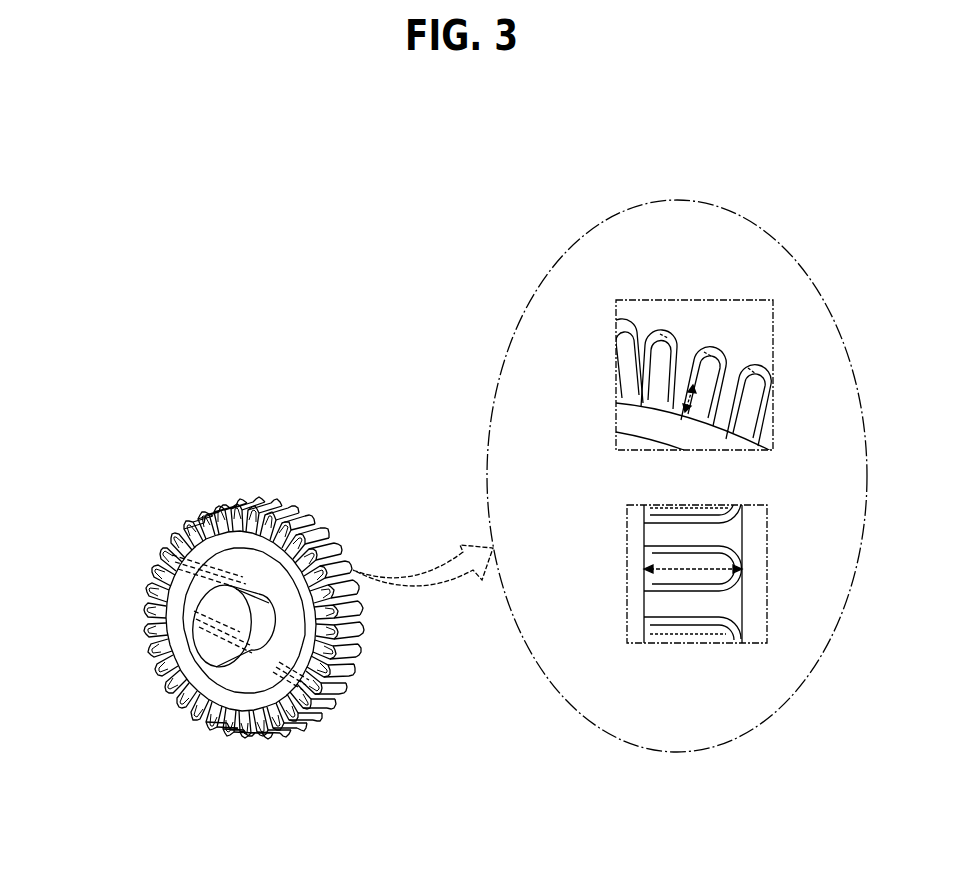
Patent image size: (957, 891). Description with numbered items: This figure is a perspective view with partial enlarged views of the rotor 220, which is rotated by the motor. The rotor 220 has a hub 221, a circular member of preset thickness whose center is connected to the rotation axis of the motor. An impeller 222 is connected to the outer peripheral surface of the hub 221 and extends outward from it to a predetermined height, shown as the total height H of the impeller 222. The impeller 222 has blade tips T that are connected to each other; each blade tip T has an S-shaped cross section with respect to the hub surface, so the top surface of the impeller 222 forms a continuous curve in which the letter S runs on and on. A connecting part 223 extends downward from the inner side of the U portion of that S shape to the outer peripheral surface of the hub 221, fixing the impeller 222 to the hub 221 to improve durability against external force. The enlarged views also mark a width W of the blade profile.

The rotor 220 is at (116, 379).
The hub 221 is at (174, 595).
The impeller 222 is at (239, 498).
The connecting part 223 is at (167, 528).
The blade tip T is at (650, 322).
The total height of the impeller H is at (683, 414).
The tooth width W is at (707, 570).